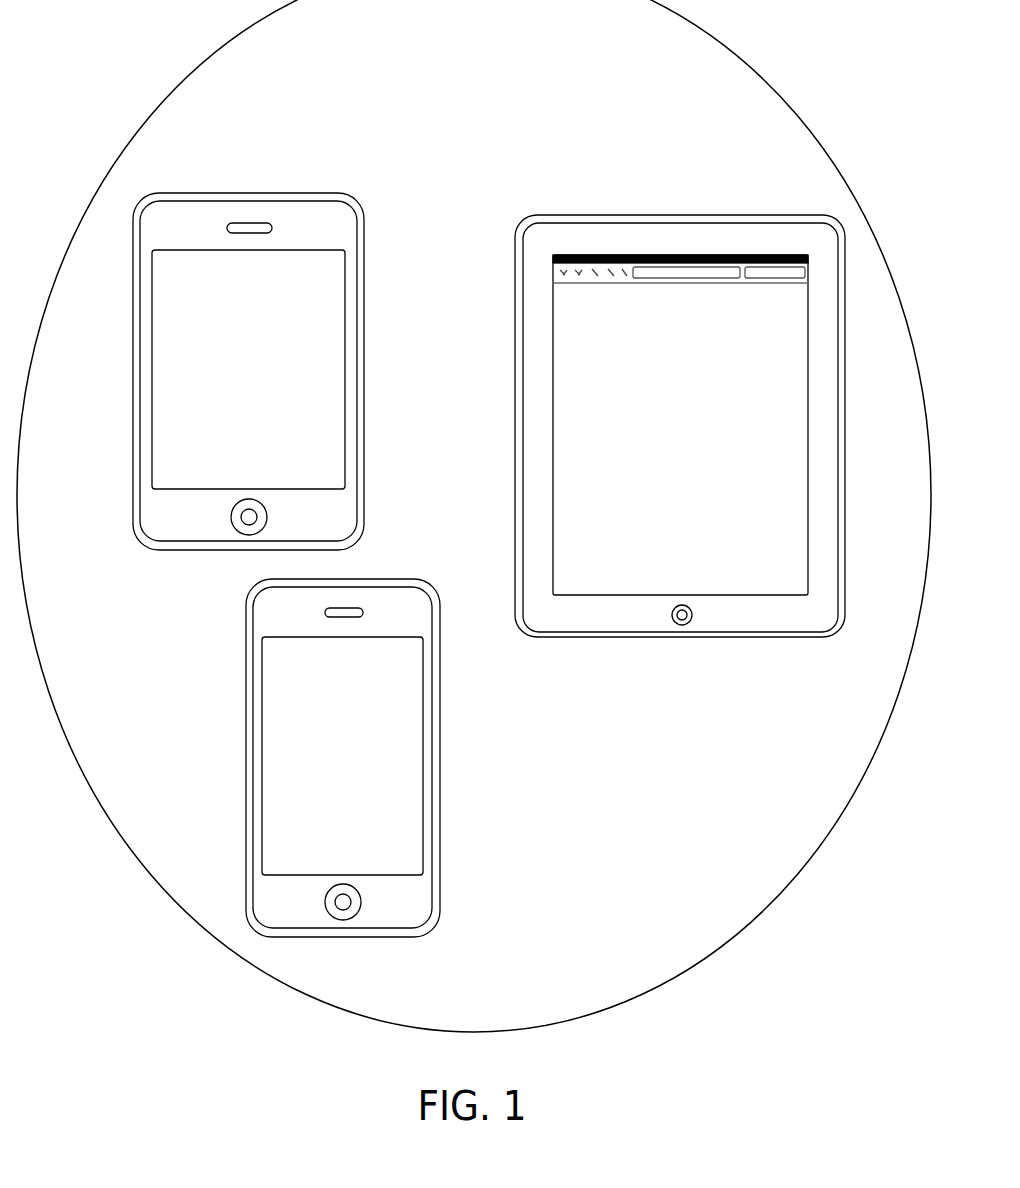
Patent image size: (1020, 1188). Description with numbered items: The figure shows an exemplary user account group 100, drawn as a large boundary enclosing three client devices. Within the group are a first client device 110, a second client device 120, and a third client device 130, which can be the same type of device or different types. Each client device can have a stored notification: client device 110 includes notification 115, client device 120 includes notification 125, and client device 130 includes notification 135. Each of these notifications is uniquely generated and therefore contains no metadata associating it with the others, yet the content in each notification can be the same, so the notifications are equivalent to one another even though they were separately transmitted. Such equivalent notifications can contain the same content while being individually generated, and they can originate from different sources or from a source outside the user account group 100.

The user account group 100 is at (493, 53).
The client device 110 is at (365, 255).
The notification 115 is at (227, 328).
The client device 120 is at (513, 490).
The notification 125 is at (658, 356).
The client device 130 is at (440, 848).
The notification 135 is at (322, 701).